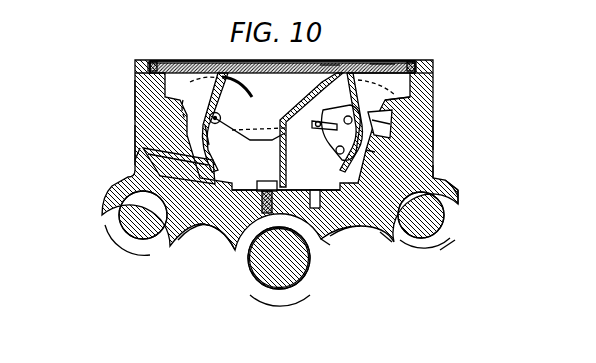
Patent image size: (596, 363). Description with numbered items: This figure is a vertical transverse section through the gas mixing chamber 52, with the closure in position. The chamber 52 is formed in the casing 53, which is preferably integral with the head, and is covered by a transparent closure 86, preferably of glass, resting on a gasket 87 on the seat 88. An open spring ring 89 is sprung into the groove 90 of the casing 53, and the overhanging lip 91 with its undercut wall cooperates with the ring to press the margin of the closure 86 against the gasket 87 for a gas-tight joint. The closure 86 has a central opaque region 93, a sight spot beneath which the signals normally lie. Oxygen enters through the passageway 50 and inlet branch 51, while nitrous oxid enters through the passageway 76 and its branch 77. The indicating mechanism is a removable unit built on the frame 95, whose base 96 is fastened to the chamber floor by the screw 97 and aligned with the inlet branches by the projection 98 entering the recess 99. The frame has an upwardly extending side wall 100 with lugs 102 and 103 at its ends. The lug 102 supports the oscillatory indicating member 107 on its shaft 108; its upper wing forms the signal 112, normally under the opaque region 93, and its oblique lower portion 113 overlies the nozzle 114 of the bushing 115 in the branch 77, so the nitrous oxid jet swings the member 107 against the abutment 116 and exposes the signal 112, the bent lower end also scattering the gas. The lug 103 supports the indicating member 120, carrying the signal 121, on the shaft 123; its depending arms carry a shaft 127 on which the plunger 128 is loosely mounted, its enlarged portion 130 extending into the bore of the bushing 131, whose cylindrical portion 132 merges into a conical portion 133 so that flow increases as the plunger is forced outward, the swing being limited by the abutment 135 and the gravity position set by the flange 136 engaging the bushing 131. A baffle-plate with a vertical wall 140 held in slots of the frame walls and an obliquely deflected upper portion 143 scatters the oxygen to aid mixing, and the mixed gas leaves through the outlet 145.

The passageway 50 is at (425, 238).
The inlet branch 51 is at (421, 215).
The mixing chamber 52 is at (222, 118).
The casing 53 is at (410, 128).
The passageway 76 is at (138, 238).
The branch 77 is at (143, 215).
The closure 86 is at (186, 64).
The gasket 87 is at (433, 82).
The seat 88 is at (150, 90).
The open spring ring 89 is at (392, 63).
The groove 90 is at (134, 61).
The overhanging lip 91 is at (151, 62).
The central opaque region 93 is at (255, 93).
The frame 95 is at (340, 156).
The base 96 is at (279, 258).
The screw 97 is at (428, 60).
The projection 98 is at (340, 238).
The recess 99 is at (340, 262).
The side wall 100 is at (205, 226).
The lug 102 is at (135, 140).
The lug 103 is at (392, 112).
The oscillatory indicating member 107 is at (205, 130).
The shaft 108 is at (172, 108).
The signal 112 is at (217, 61).
The lower portion 113 is at (262, 148).
The nozzle 114 is at (148, 162).
The bushing 115 is at (130, 177).
The abutment 116 is at (135, 100).
The indicating member 120 is at (433, 135).
The signal 121 is at (383, 63).
The shaft 123 is at (410, 150).
The shaft 127 is at (433, 172).
The plunger 128 is at (378, 232).
The enlarged portion 130 is at (460, 192).
The bushing 131 is at (437, 250).
The cylindrical portion 132 is at (470, 194).
The conical portion 133 is at (460, 186).
The abutment 135 is at (400, 99).
The flange 136 is at (312, 127).
The vertical wall 140 is at (279, 258).
The upper portion 143 is at (330, 65).
The outlet 145 is at (281, 303).